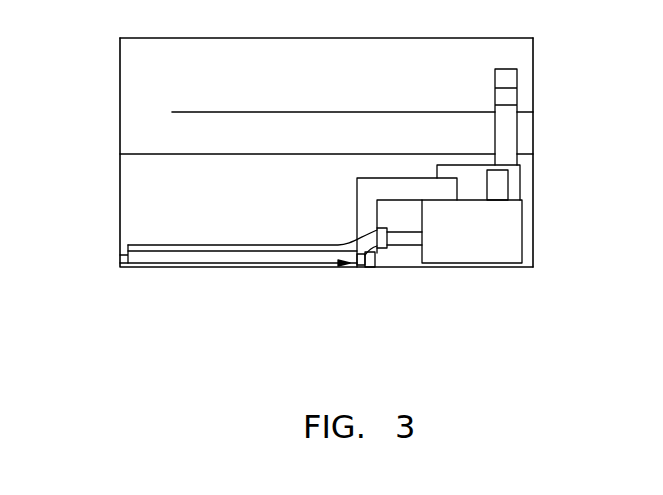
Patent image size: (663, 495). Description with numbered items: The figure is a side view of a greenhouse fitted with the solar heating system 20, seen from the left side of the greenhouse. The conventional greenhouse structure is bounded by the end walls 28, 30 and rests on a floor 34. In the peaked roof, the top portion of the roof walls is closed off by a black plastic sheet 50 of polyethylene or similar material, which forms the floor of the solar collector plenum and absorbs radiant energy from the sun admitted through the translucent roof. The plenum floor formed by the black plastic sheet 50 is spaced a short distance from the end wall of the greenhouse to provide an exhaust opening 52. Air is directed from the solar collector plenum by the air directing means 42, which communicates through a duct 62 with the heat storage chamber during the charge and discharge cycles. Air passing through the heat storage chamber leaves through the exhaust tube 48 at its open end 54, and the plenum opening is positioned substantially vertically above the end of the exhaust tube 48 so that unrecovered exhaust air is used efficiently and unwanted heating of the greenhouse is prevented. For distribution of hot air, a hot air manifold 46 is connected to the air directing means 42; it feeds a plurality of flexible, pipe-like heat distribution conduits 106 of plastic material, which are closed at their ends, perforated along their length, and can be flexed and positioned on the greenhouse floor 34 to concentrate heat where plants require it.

The solar heating system 20 is at (372, 133).
The end wall 28 is at (120, 190).
The end wall 30 is at (533, 190).
The floor 34 is at (230, 267).
The air directing means 42 is at (457, 162).
The hot air manifold 46 is at (382, 263).
The exhaust tube 48 is at (222, 244).
The black plastic sheet 50 is at (275, 111).
The exhaust opening 52 is at (140, 110).
The open end 54 is at (120, 257).
The duct 62 is at (485, 188).
The heat distribution pipe-like conduits 106 is at (332, 268).